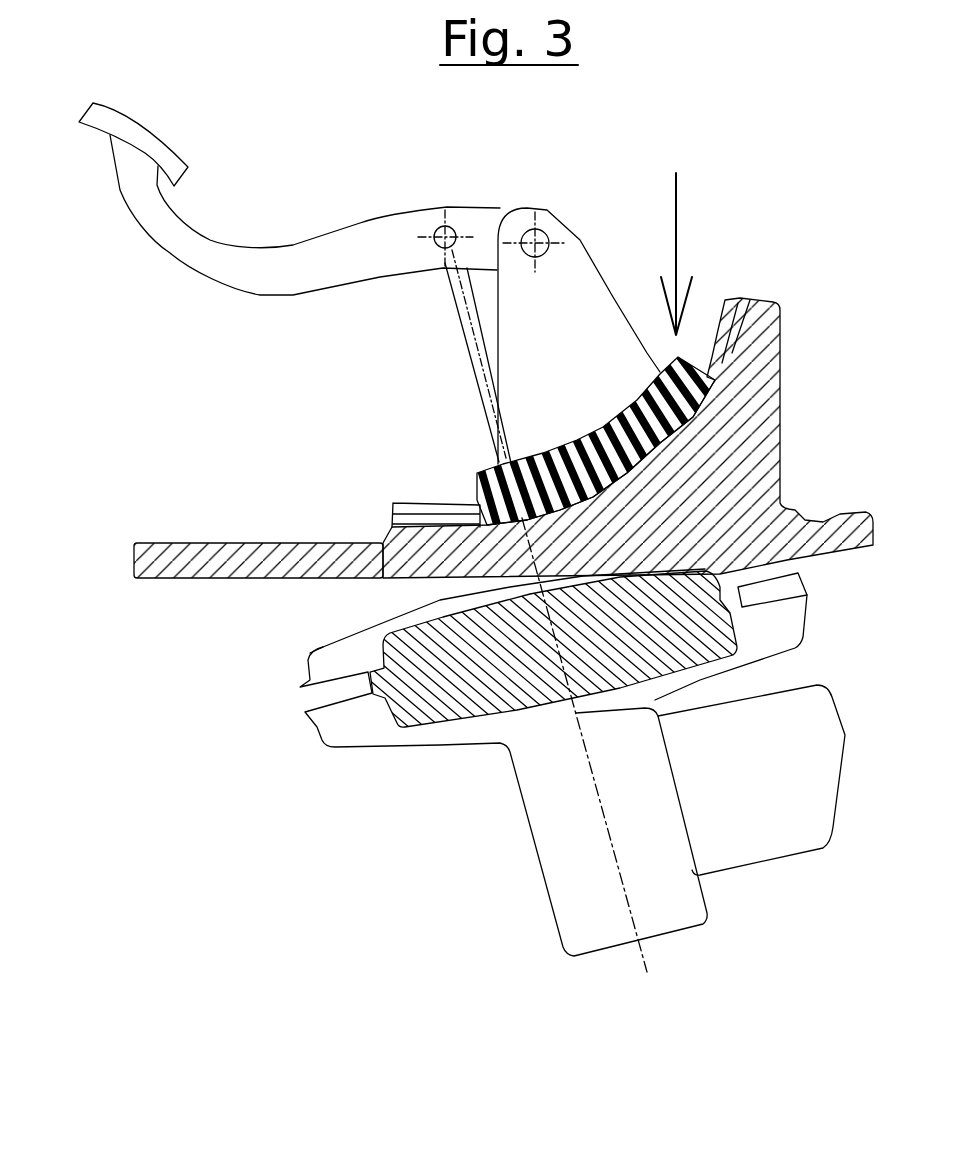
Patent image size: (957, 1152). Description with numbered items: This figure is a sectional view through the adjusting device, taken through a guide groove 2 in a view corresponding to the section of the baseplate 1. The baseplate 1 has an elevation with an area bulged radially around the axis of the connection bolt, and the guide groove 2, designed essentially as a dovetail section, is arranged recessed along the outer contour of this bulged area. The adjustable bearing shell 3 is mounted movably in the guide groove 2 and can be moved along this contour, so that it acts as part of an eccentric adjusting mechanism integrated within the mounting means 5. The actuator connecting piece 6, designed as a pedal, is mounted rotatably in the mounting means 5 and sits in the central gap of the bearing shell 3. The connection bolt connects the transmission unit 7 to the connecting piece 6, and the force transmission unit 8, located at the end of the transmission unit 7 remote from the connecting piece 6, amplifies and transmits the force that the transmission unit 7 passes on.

The baseplate 1 is at (227, 578).
The guide groove 2 is at (728, 323).
The adjustable bearing shell 3 is at (617, 343).
The mounting means 5 is at (676, 241).
The actuator connecting piece 6 is at (253, 272).
The transmission unit 7 is at (463, 342).
The force transmission unit 8 is at (482, 733).